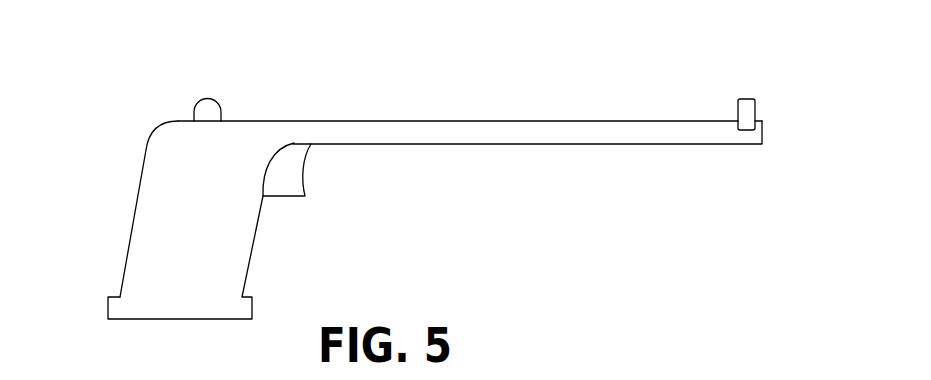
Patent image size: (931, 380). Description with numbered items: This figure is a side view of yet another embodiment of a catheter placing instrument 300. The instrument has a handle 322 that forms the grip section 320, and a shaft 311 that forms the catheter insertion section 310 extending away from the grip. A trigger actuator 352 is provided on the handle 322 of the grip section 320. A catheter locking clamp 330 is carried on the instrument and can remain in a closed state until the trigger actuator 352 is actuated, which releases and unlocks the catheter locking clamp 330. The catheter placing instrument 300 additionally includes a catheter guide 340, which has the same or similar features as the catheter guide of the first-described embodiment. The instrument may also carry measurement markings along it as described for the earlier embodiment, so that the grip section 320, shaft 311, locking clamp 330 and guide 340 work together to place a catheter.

The catheter placing instrument 300 is at (388, 119).
The catheter insertion section 310 is at (470, 152).
The shaft 311 is at (470, 89).
The grip section 320 is at (293, 287).
The handle 322 is at (162, 223).
The catheter locking clamp 330 is at (747, 108).
The catheter guide 340 is at (207, 103).
The trigger actuator 352 is at (287, 185).